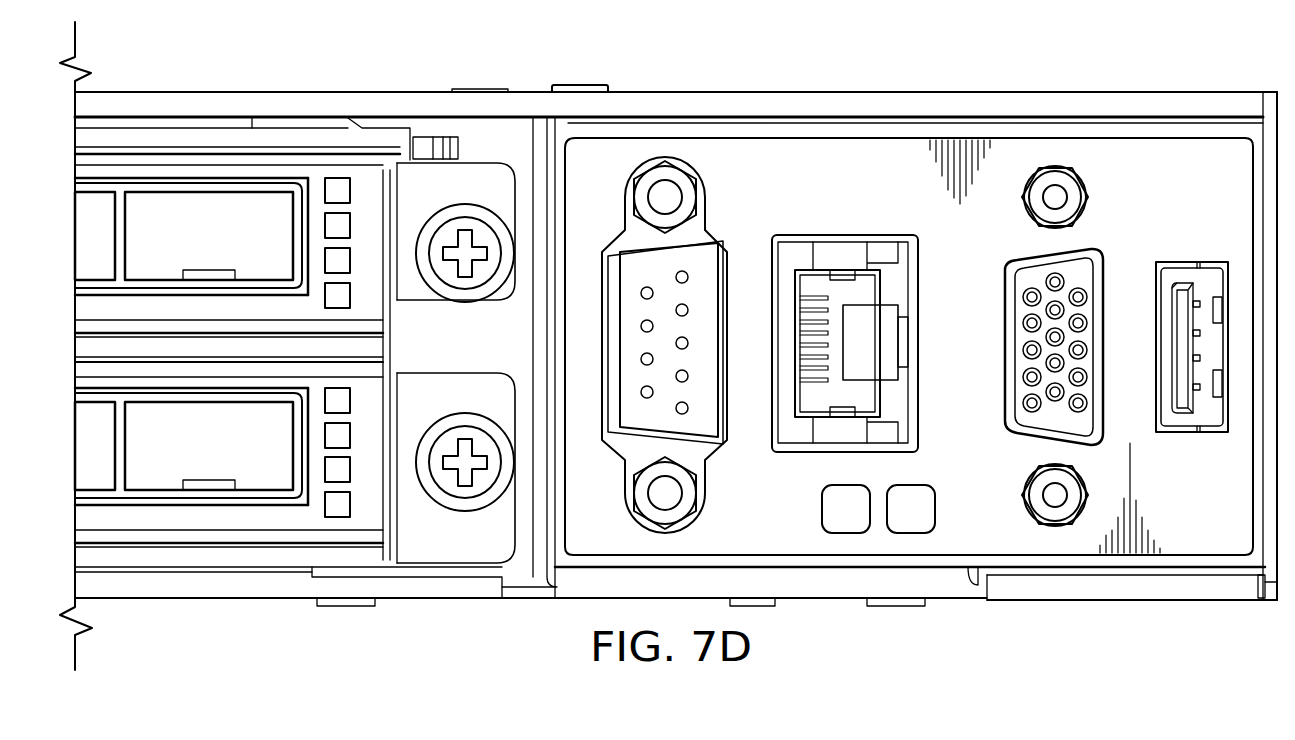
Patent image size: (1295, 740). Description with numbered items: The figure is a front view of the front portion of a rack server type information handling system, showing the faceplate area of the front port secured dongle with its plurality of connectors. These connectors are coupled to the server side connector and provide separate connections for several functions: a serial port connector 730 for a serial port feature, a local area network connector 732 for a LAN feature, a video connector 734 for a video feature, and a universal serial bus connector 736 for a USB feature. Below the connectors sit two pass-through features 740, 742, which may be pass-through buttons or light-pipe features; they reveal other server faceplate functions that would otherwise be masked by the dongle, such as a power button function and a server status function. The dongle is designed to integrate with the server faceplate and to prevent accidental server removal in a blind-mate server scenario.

The serial port connector 730 is at (713, 232).
The local area network (LAN) connector 732 is at (853, 235).
The video connector 734 is at (1090, 262).
The universal serial bus (USB) connector 736 is at (1208, 266).
The pass-through feature 740 is at (840, 505).
The pass-through feature 742 is at (918, 505).